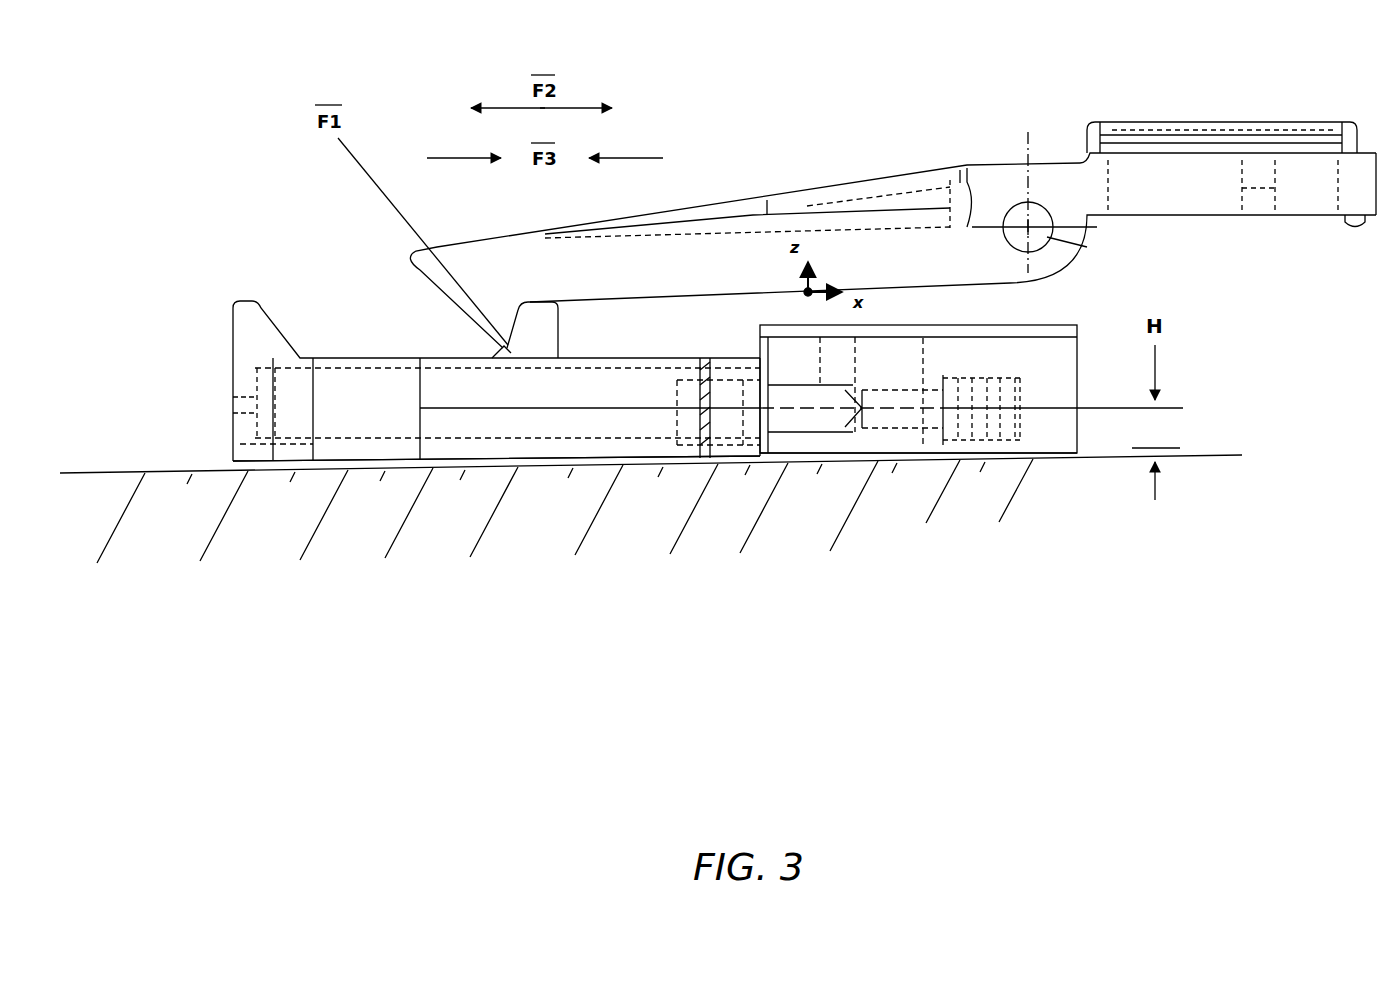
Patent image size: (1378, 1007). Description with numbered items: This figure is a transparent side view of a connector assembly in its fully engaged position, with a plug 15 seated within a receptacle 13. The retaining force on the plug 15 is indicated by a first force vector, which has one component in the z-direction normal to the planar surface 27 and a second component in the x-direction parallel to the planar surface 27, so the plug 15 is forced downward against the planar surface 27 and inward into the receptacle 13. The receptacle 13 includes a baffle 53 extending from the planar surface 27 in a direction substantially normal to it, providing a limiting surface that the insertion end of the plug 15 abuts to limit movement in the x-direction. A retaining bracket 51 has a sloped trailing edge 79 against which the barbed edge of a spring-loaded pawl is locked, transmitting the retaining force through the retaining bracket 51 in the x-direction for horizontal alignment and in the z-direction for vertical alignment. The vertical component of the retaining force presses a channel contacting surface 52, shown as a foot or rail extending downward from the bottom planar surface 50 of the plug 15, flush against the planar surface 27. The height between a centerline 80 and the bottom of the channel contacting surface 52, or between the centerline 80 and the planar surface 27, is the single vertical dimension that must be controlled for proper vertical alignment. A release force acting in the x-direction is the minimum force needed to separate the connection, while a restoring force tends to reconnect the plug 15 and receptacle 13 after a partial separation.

The receptacle 13 is at (899, 104).
The plug 15 is at (340, 357).
The trailing edge 79 is at (500, 350).
The retaining bracket 51 is at (555, 330).
The baffle 53 is at (762, 338).
The bottom planar surface 50 is at (545, 467).
The channel contacting surface 52 is at (680, 467).
The planar surface 27 is at (803, 467).
The centerline 80 is at (1200, 408).